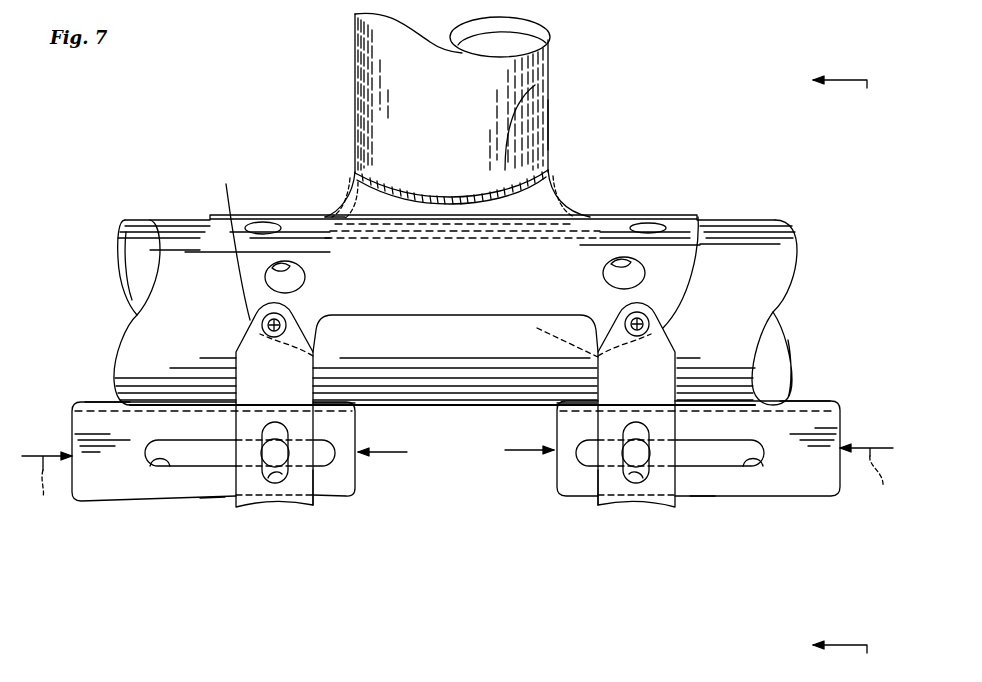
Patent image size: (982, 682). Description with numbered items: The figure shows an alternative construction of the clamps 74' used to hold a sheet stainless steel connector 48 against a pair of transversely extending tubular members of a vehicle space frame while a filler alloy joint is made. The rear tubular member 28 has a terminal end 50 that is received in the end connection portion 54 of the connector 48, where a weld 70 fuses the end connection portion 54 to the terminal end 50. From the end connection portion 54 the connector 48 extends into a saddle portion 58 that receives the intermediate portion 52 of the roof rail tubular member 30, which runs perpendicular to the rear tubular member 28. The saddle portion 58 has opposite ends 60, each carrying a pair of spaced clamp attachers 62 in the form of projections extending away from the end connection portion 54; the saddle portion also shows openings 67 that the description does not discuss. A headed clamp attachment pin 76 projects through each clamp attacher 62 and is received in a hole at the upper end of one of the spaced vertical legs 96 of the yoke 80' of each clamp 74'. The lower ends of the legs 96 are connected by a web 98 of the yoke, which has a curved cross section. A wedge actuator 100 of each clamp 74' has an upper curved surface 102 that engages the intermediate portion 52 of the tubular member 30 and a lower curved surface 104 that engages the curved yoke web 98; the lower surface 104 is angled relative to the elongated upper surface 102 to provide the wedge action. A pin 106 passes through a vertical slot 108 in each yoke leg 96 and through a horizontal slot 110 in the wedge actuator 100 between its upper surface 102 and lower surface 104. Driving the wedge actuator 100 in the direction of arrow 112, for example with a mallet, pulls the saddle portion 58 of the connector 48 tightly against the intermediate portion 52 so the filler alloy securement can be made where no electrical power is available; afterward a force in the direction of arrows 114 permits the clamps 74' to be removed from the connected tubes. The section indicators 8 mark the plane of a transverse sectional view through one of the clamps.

The rear tubular member 28 is at (552, 57).
The weld 70 is at (505, 170).
The terminal end 50 is at (548, 125).
The end connection portion 54 is at (342, 196).
The connector 48 is at (330, 203).
The saddle portion 58 is at (600, 205).
The roof rail tubular member 30 is at (735, 210).
The opposite ends 60 is at (213, 277).
The hole 67 is at (272, 268).
The clamp attachers 62 is at (313, 360).
The headed clamp attachment pin 76 is at (263, 322).
The intermediate portion 52 is at (436, 388).
The clamp 74' is at (457, 453).
The wedge actuator 100 is at (88, 512).
The vertical legs 96 is at (236, 428).
The horizontal slot 110 is at (150, 466).
The lower curved surface 104 is at (212, 498).
The web 98 is at (279, 485).
The pin 106 is at (283, 456).
The vertical slot 108 is at (270, 481).
The yoke 80' is at (455, 537).
The upper curved surface 102 is at (97, 402).
The arrow 112 is at (462, 484).
The arrows 114 is at (393, 452).
The section line 8- 8 is at (822, 367).